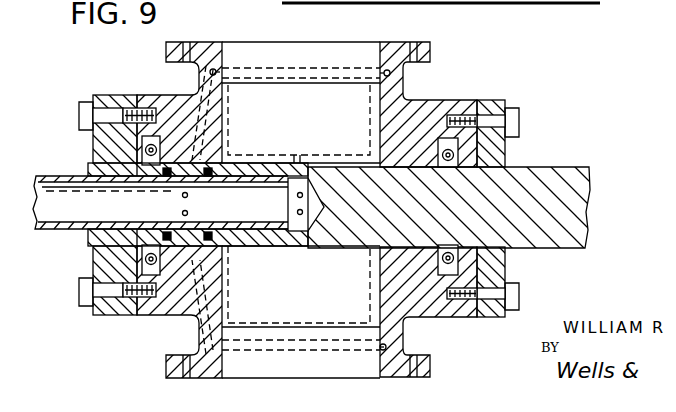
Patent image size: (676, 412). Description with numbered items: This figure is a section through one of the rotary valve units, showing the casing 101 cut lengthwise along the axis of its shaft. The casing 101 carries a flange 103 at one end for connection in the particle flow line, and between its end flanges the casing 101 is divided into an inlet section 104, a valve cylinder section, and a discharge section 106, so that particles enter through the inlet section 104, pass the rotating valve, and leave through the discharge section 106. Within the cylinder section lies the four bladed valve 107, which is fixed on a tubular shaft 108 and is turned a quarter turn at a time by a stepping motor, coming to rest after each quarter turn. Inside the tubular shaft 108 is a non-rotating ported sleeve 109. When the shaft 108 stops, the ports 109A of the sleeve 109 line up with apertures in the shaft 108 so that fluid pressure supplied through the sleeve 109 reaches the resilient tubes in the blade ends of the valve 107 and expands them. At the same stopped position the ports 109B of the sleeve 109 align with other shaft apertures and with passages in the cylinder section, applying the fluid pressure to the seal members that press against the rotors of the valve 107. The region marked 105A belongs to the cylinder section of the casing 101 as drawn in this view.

The casing 101 is at (348, 43).
The flange 103 is at (165, 365).
The inlet section 104 is at (260, 50).
The flange bolt hole 105A is at (188, 93).
The discharge section 106 is at (404, 333).
The four bladed valve 107 is at (303, 127).
The tubular shaft 108 is at (345, 164).
The non-rotating ported sleeve 109 is at (58, 175).
The ports 109A is at (293, 197).
The ports 109B is at (180, 197).